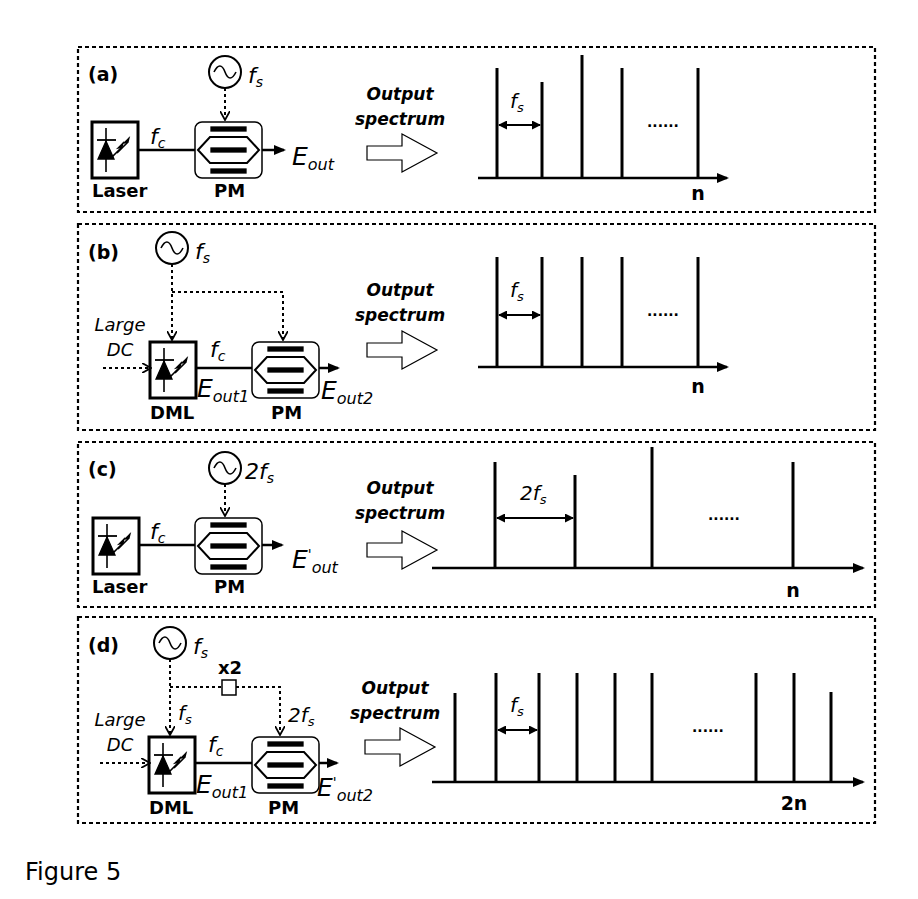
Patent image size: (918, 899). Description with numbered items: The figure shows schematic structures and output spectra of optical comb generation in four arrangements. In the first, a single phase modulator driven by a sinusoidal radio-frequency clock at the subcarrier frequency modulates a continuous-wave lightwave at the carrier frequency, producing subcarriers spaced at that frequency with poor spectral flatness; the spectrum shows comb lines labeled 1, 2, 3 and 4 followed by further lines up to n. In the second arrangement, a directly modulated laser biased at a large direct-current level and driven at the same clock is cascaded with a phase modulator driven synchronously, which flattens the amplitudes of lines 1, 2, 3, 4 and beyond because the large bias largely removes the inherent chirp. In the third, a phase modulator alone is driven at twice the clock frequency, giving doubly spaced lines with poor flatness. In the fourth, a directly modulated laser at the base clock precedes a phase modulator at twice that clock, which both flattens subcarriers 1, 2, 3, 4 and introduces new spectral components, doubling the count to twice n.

The first spectral line / comb tone 1 is at (495, 441).
The second spectral line / comb tone 2 is at (556, 448).
The third spectral line / comb tone 3 is at (614, 434).
The fourth spectral line / comb tone 4 is at (618, 441).